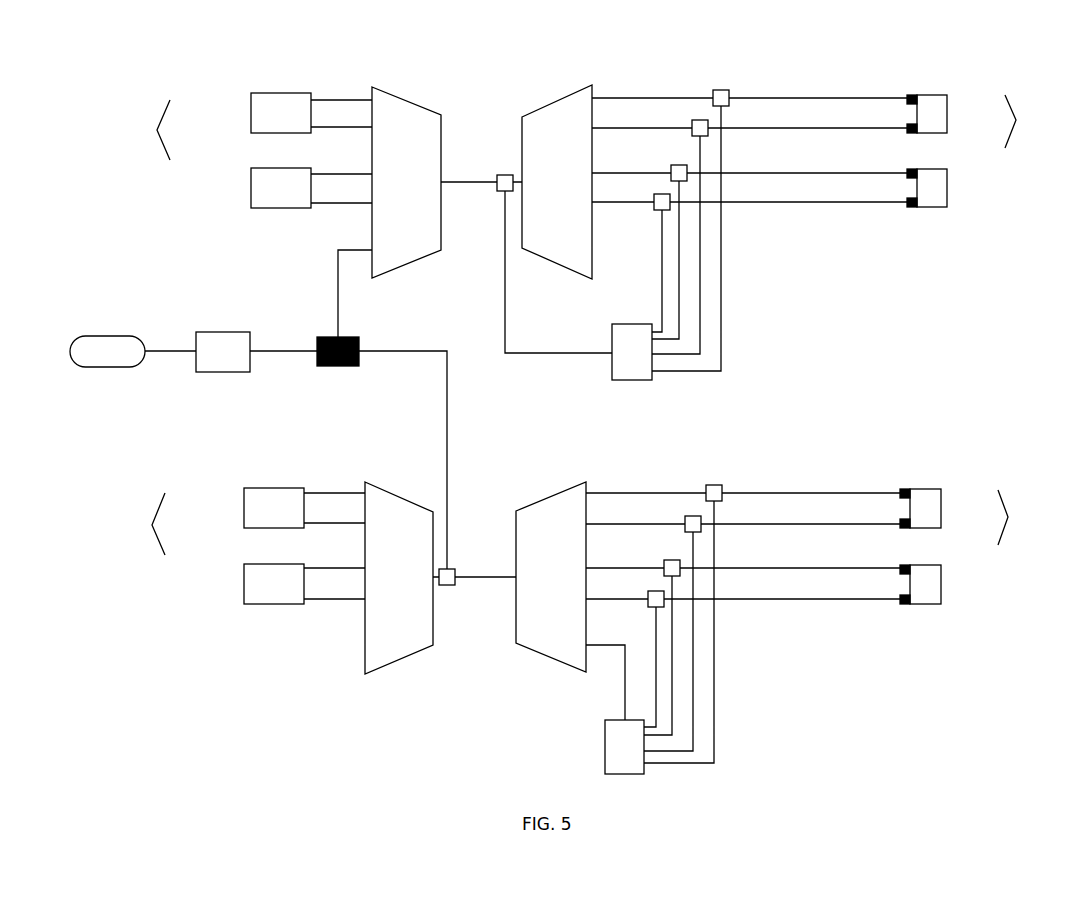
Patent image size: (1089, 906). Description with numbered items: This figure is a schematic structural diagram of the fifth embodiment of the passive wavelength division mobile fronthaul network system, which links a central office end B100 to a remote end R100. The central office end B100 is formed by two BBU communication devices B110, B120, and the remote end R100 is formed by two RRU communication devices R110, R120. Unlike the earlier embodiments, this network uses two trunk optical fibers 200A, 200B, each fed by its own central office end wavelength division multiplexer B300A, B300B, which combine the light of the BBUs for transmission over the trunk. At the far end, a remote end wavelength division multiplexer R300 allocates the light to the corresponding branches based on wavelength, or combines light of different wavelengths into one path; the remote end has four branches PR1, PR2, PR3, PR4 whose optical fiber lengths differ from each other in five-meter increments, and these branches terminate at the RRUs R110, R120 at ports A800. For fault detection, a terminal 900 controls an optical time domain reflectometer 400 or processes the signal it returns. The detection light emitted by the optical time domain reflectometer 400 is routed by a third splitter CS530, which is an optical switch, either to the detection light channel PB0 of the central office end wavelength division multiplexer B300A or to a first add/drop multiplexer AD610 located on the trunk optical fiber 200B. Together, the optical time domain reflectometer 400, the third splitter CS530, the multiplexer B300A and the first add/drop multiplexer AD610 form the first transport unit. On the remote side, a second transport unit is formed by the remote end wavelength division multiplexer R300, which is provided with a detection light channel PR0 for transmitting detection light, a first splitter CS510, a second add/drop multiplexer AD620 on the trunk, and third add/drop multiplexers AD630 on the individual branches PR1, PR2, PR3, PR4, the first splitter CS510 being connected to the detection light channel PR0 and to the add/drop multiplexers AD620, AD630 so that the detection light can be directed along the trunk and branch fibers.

The central office end B100 is at (136, 327).
The communication device BBU B110 is at (251, 108).
The communication device BBU B120 is at (251, 187).
The central office end wavelength division multiplexer B300A is at (407, 100).
The central office end wavelength division multiplexer B300B is at (402, 493).
The trunk optical fiber 200A is at (477, 181).
The trunk optical fiber 200B is at (466, 577).
The first add/drop multiplexer AD610 is at (455, 586).
The second add/drop multiplexer AD620 is at (505, 175).
The third add/drop multiplexer AD630 is at (721, 90).
The remote end wavelength division multiplexer R300 is at (557, 98).
The detection light channel PR0 is at (585, 643).
The branch of the remote end PR1 is at (810, 97).
The branch of the remote end PR2 is at (818, 128).
The branch of the remote end PR3 is at (818, 172).
The branch of the remote end PR4 is at (818, 202).
The detection light channel PB0 is at (372, 249).
The access ports A800 is at (912, 94).
The communication device RRU R110 is at (947, 97).
The communication device RRU R120 is at (947, 171).
The remote end R100 is at (1031, 320).
The terminal 900 is at (108, 336).
The optical time domain reflectometer 400 is at (225, 333).
The third splitter CS530 is at (355, 366).
The first splitter CS510 is at (612, 367).